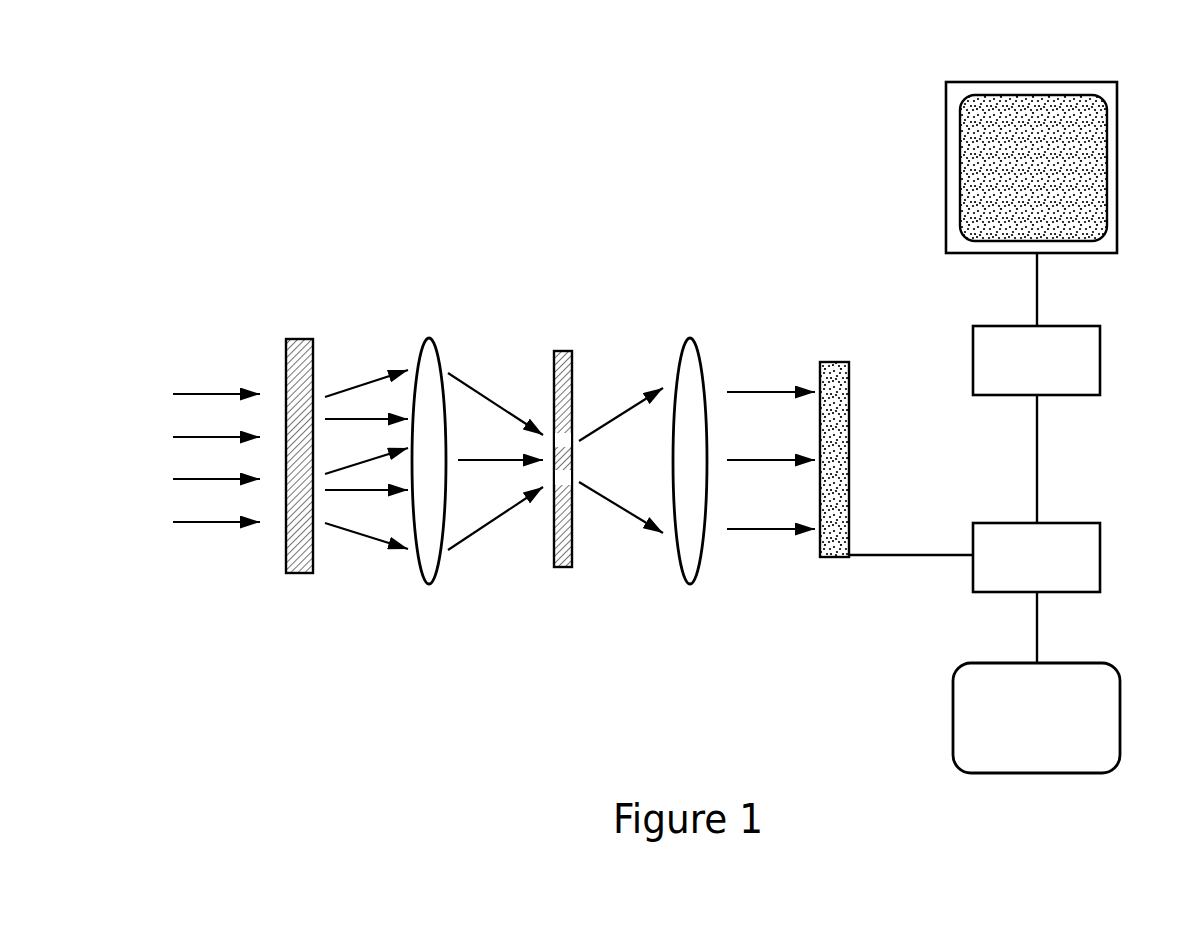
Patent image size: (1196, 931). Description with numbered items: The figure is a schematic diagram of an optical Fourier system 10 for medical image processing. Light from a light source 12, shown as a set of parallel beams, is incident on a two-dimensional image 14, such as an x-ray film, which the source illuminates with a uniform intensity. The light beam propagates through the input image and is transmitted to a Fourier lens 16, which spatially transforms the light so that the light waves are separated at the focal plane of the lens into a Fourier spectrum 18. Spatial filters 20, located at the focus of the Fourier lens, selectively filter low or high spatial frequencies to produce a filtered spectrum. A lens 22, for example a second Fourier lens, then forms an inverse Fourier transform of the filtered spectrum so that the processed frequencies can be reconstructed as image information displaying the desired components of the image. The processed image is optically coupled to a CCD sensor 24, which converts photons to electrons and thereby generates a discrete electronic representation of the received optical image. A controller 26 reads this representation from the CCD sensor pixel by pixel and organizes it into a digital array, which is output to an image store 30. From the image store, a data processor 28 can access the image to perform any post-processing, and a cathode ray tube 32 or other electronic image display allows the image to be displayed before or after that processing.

The optical Fourier system 10 is at (601, 72).
The light source 12 is at (200, 523).
The two-dimensional image 14 is at (300, 575).
The Fourier lens 16 is at (428, 585).
The Fourier spectrum 18 is at (545, 427).
The spatial filters 20 is at (563, 569).
The lens 22 is at (690, 585).
The CCD sensor 24 is at (828, 358).
The controller 26 is at (1100, 554).
The data processor 28 is at (1120, 703).
The image store 30 is at (1100, 363).
The cathode ray tube 32 is at (1117, 146).